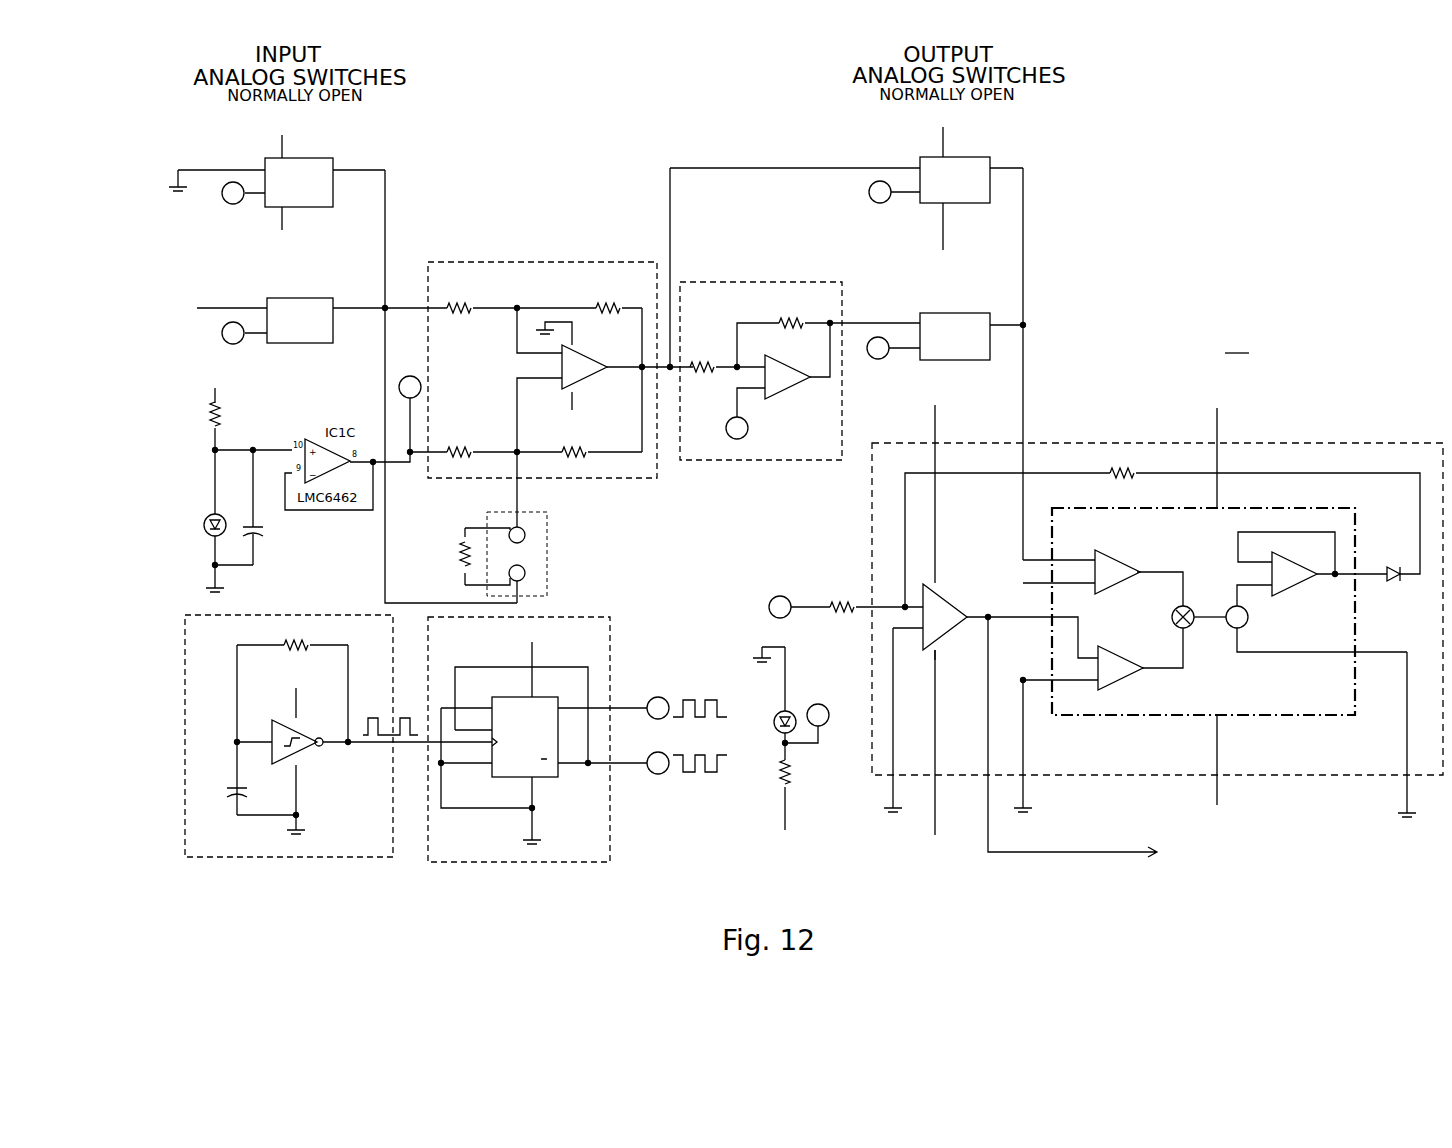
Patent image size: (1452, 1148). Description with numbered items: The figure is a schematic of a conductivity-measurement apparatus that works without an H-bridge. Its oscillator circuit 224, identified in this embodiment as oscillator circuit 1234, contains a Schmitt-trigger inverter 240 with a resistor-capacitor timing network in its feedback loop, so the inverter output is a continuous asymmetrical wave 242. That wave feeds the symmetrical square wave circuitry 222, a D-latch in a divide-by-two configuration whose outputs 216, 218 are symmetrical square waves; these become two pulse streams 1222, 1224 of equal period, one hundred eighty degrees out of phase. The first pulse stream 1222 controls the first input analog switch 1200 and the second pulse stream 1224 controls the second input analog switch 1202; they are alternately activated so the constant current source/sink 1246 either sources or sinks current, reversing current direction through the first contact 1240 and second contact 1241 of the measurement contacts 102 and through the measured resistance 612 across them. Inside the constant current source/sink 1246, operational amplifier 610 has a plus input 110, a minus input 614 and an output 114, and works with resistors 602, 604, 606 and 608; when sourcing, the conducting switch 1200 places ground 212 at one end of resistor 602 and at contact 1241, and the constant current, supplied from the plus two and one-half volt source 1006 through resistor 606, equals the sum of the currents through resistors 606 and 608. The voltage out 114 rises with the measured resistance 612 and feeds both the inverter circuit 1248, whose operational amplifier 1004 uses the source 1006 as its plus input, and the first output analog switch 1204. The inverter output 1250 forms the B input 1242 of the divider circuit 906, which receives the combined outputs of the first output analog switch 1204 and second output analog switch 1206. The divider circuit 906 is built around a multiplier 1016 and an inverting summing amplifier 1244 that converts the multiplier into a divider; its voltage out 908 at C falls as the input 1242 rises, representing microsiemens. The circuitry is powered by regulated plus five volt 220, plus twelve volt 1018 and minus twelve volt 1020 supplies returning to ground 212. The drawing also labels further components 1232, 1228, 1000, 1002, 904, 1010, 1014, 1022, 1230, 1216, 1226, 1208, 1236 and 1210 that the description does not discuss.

The ground GND 212 is at (175, 185).
The +12 Volt power supply 1018 is at (280, 149).
The −12 Volt power supply 1020 is at (280, 222).
The +5 Volt power supply 220 is at (222, 312).
The First Input Analog Switch 1200 is at (320, 165).
The Second Input Analog Switch 1202 is at (280, 300).
The first pulse stream J 1222 is at (225, 199).
The second pulse stream K 1224 is at (220, 335).
The resistor R9 1232 is at (211, 421).
The voltage reference REF1 1228 is at (205, 505).
The Constant Current Source/Sink circuit 1246 is at (432, 265).
The resistor R1 602 is at (462, 301).
The resistor R2 604 is at (613, 306).
The resistor R3 606 is at (463, 441).
The resistor R4 608 is at (585, 455).
The operational amplifier IC1A 610 is at (612, 358).
The '−' input of IC1A 614 is at (515, 321).
The +2.5 Volt Source 1006 is at (420, 415).
The '+' input of IC1A 110 is at (515, 400).
The output voltage of the Constant Current Source/Sink 114 is at (647, 372).
The resistor R5 1000 is at (708, 358).
The resistor R6 1002 is at (795, 318).
The operational amplifier IC1B 1004 is at (778, 392).
The Inverter circuit 1248 is at (832, 282).
The voltage output of the Inverter 1250 is at (887, 303).
The First Output Analog Switch 1204 is at (983, 163).
The Second Output Analog Switch 1206 is at (983, 317).
The voltage output B 1242 is at (1028, 395).
The Divider Circuit 906 is at (880, 513).
The A input signal 904 is at (803, 603).
The resistor R7 1010 is at (837, 597).
The operational amplifier IC3 1244 is at (938, 608).
The resistor R8 1014 is at (1130, 465).
The Multiplier 1016 is at (1088, 520).
The diode D1 1022 is at (1387, 563).
The voltage reference REF2 1230 is at (778, 714).
The -0.1 volt source 1216 is at (823, 737).
The resistor R10 1226 is at (792, 773).
The Oscillator circuit 1234 is at (287, 642).
The schmitt inverter IC6 1208 is at (283, 735).
The capacitor C1 1236 is at (230, 784).
The asymmetrical wave 242 is at (388, 728).
The inverter 240 is at (380, 750).
The Symmetrical Square Wave Circuitry 222 is at (590, 635).
The flip-flop IC7 1210 is at (532, 717).
The D-latch output signal 216 is at (700, 695).
The D-latch output signal 218 is at (702, 778).
The Voltage Out 908 is at (1005, 853).
The Contact-1 1240 is at (526, 530).
The Contact-2 1241 is at (526, 577).
The Measurement Contacts 102 is at (535, 558).
The measured resistance 612 is at (450, 557).
The Oscillator Circuit 224 is at (198, 708).